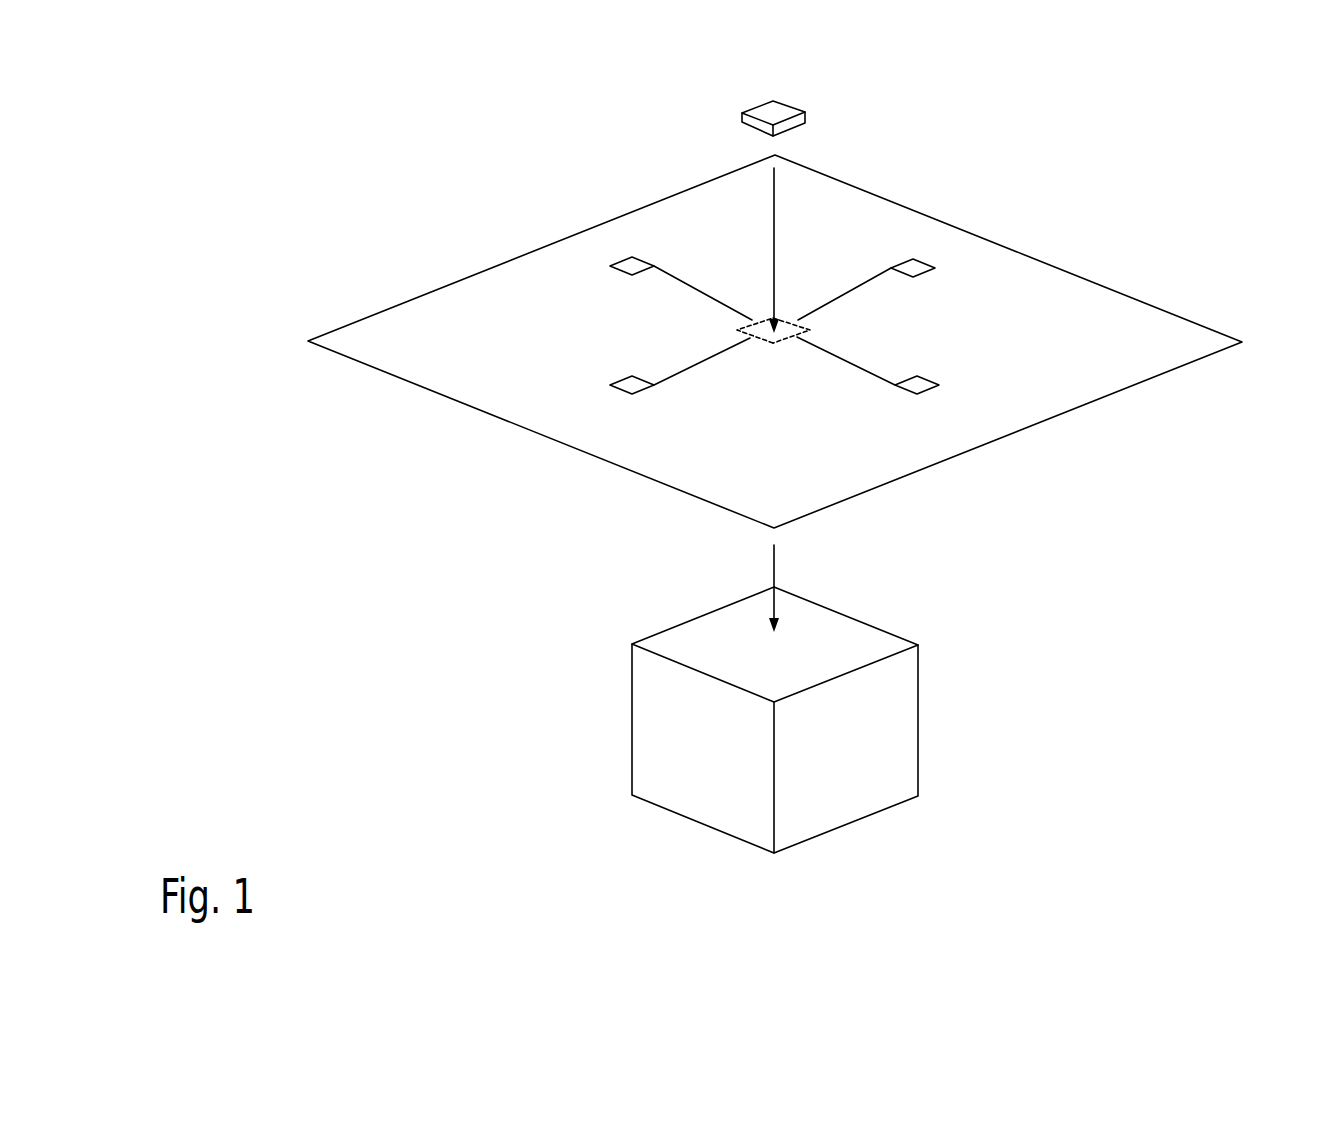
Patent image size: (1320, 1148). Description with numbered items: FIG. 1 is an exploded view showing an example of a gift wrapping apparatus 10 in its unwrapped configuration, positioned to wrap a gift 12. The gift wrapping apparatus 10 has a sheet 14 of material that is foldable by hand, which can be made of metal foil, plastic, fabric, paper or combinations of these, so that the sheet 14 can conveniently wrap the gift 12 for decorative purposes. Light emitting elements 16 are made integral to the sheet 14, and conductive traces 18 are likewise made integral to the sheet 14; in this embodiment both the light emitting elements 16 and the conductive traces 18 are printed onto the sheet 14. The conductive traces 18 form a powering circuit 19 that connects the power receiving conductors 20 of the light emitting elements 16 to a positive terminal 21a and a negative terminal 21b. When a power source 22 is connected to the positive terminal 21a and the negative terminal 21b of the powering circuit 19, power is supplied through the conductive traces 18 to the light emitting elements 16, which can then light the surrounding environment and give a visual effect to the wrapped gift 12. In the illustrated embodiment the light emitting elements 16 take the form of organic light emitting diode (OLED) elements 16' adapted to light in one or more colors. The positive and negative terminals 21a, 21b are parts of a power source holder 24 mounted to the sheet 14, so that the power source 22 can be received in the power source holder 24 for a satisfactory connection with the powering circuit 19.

The gift wrapping apparatus 10 is at (348, 210).
The gift 12 is at (919, 716).
The sheet 14 is at (1100, 315).
The light emitting elements 16 is at (780, 303).
The organic light emitting diode (OLED) elements 16' is at (780, 303).
The conductive traces 18 is at (700, 288).
The powering circuit 19 is at (910, 428).
The power receiving conductors 20 is at (641, 392).
The positive terminal 21a is at (739, 322).
The negative terminal 21b is at (802, 322).
The power source 22 is at (805, 118).
The power source holder 24 is at (782, 348).